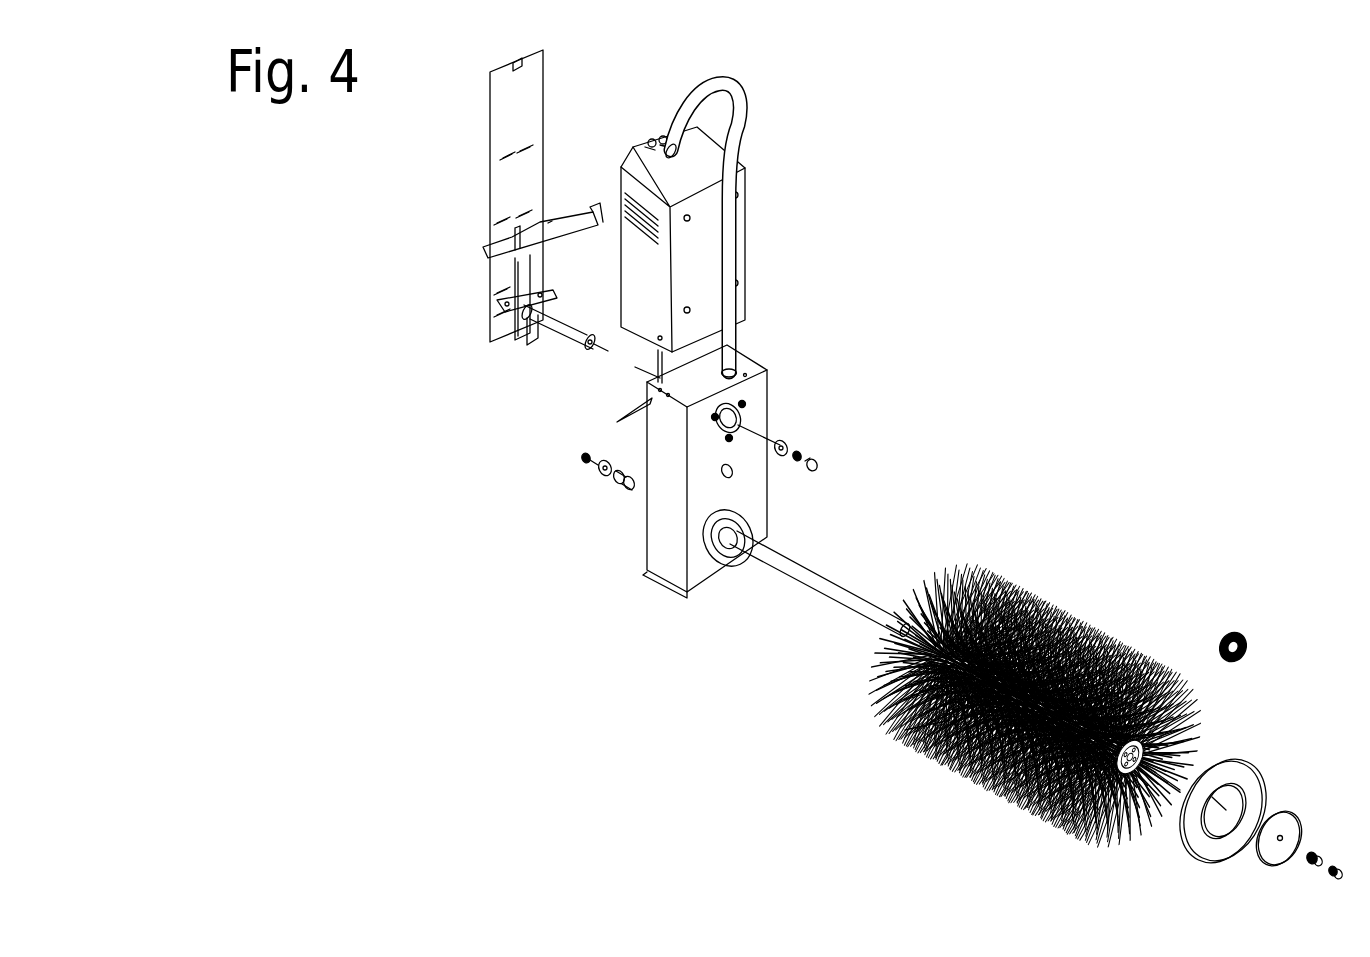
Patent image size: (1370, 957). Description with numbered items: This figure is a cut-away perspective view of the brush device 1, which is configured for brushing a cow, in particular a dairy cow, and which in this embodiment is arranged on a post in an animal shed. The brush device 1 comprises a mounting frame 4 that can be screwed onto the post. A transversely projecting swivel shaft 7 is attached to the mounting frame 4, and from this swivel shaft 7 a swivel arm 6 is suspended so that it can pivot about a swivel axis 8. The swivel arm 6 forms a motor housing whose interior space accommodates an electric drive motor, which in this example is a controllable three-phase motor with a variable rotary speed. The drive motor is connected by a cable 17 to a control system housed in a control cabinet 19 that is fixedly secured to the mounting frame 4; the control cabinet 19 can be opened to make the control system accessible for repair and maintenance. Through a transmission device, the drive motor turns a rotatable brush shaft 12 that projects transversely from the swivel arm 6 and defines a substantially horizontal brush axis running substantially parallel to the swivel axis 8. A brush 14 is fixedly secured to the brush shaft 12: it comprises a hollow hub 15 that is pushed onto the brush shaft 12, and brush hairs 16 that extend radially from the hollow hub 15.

The brush device 1 is at (728, 249).
The mounting frame 4 is at (498, 136).
The swivel arm 6 is at (788, 403).
The swivel shaft 7 is at (572, 336).
The swivel axis 8 is at (620, 359).
The brush shaft 12 is at (795, 572).
The brush 14 is at (1033, 655).
The hollow hub 15 is at (1192, 740).
The brush hairs 16 is at (900, 728).
The cable 17 is at (733, 90).
The control cabinet 19 is at (637, 262).